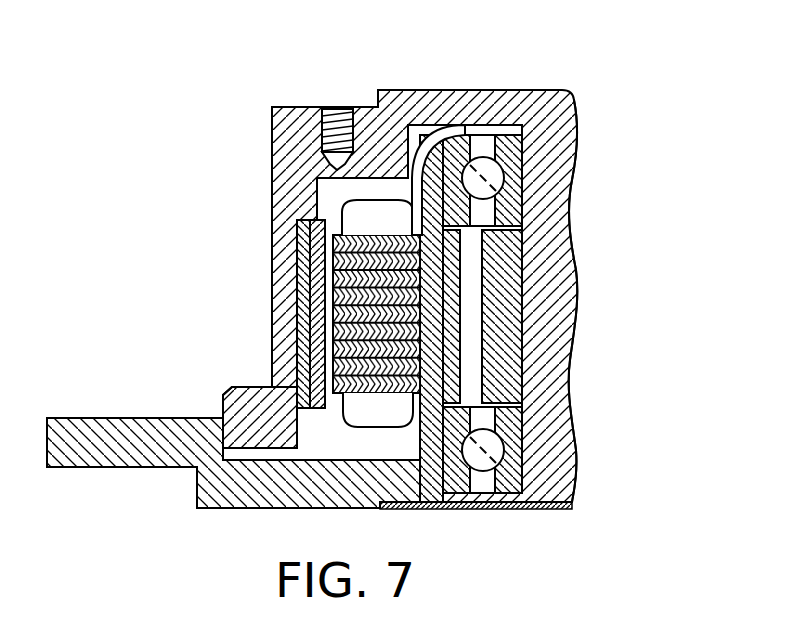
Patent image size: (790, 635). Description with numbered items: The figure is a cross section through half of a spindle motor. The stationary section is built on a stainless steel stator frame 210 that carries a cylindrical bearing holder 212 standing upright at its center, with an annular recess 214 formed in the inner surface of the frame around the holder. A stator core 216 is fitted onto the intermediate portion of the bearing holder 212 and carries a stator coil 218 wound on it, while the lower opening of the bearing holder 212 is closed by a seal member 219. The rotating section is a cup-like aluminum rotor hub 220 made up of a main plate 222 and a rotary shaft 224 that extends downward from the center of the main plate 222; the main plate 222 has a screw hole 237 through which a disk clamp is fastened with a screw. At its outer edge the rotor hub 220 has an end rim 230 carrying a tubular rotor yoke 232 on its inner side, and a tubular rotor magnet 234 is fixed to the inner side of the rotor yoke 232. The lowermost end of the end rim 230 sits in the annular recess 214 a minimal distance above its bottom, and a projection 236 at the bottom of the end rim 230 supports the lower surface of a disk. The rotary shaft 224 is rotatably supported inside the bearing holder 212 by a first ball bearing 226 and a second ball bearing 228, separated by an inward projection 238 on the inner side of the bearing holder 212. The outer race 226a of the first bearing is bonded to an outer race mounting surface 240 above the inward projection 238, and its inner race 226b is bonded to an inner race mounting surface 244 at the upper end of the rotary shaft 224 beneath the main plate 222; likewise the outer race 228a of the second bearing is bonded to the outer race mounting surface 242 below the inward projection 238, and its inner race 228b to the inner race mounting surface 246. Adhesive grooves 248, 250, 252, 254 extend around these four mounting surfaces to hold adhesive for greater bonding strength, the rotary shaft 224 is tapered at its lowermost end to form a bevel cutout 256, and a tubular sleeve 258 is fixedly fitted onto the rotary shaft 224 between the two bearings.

The stator frame 210 is at (218, 484).
The bearing holder 212 is at (513, 358).
The annular recess 214 is at (307, 504).
The stator core 216 is at (338, 320).
The stator coil 218 is at (362, 213).
The seal member 219 is at (572, 506).
The rotor hub 220 is at (281, 102).
The main plate 222 is at (376, 85).
The rotary shaft 224 is at (557, 325).
The first ball bearing 226 is at (545, 138).
The outer race of first ball bearing 226a is at (483, 125).
The inner race of first ball bearing 226b is at (533, 140).
The second ball bearing 228 is at (540, 483).
The outer race of second ball bearing 228a is at (468, 497).
The inner race of second ball bearing 228b is at (513, 492).
The end rim 230 is at (304, 219).
The rotor yoke 232 is at (300, 272).
The rotor magnet 234 is at (325, 462).
The projection 236 is at (224, 409).
The screw hole 237 is at (330, 113).
The inward projection 238 is at (450, 267).
The outer race mounting surface 240 is at (483, 143).
The outer race mounting surface 242 is at (465, 470).
The inner race mounting surface 244 is at (540, 190).
The inner race mounting surface 246 is at (540, 455).
The adhesive groove 248 is at (435, 120).
The adhesive groove 250 is at (443, 462).
The adhesive groove 252 is at (535, 175).
The adhesive groove 254 is at (530, 423).
The bevel cutout 256 is at (470, 408).
The sleeve 258 is at (510, 284).